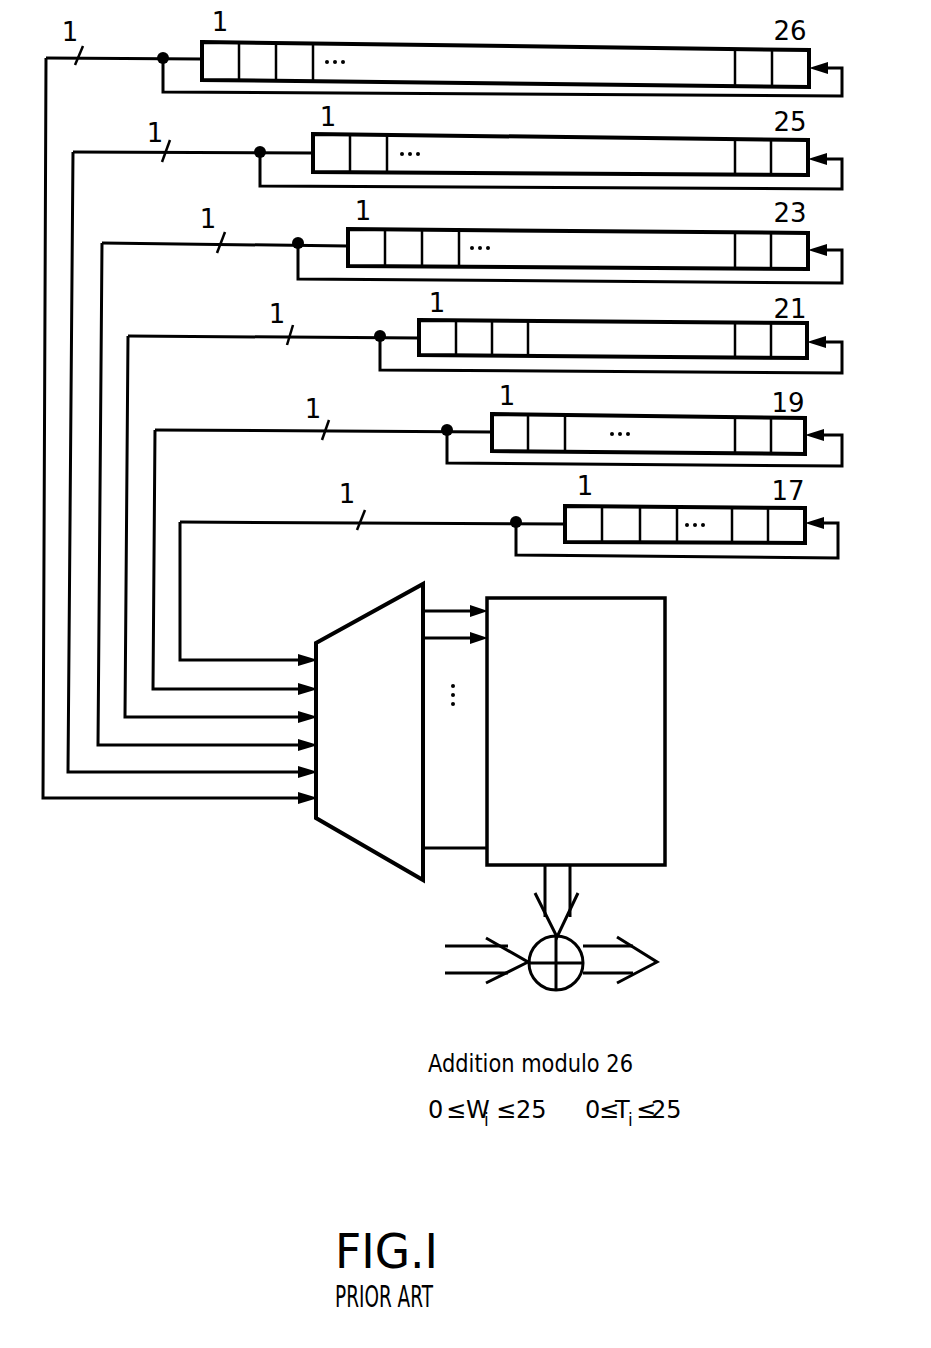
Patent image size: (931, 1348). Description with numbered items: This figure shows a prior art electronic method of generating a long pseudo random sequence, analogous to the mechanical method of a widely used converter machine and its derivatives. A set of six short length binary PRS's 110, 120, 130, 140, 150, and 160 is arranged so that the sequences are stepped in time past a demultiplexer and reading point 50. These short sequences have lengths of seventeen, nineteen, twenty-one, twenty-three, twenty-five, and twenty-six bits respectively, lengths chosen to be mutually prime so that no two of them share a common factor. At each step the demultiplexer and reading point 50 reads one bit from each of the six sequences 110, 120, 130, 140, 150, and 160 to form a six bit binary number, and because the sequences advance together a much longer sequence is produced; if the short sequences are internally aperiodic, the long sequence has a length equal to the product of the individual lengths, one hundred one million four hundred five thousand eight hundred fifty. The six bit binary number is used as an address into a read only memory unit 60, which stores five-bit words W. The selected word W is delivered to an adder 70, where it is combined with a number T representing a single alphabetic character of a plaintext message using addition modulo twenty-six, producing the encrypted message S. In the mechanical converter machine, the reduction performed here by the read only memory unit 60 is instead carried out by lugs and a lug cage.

The demultiplexer and reading point 50 is at (341, 627).
The read only memory unit 60 is at (665, 700).
The adder 70 is at (575, 991).
The short length binary PRS 110 is at (810, 517).
The short length binary PRS 120 is at (810, 427).
The short length binary PRS 130 is at (812, 332).
The short length binary PRS 140 is at (812, 240).
The short length binary PRS 150 is at (812, 147).
The short length binary PRS 160 is at (812, 53).